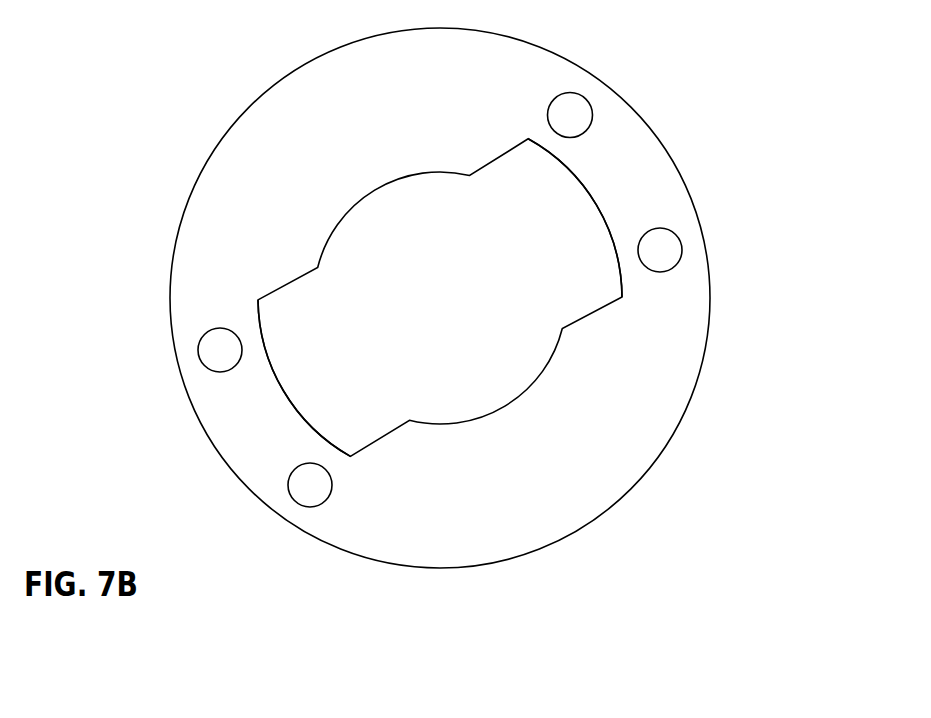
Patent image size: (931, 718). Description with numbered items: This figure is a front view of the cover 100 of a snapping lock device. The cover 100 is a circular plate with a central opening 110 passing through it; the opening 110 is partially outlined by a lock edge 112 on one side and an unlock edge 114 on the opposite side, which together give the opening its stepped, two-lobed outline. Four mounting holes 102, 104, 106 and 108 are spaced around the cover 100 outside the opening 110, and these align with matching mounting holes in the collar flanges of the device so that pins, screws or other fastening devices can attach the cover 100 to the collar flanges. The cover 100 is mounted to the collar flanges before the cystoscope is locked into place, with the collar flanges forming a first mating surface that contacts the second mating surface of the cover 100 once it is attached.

The cover 100 is at (675, 386).
The mounting hole 102 is at (585, 107).
The mounting hole 104 is at (675, 250).
The mounting hole 106 is at (203, 358).
The mounting hole 108 is at (297, 493).
The opening 110 is at (405, 241).
The lock edge 112 is at (542, 376).
The unlock edge 114 is at (295, 412).